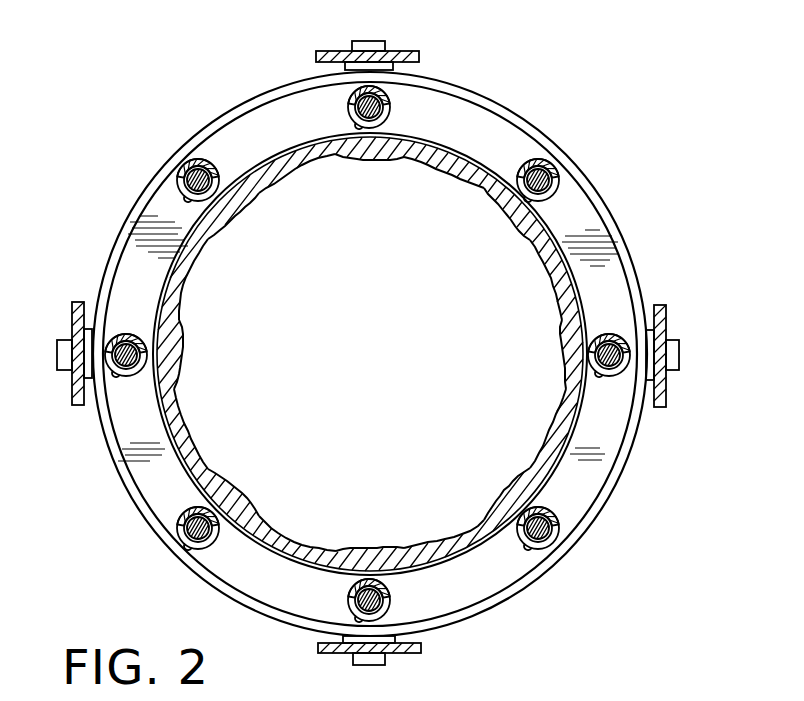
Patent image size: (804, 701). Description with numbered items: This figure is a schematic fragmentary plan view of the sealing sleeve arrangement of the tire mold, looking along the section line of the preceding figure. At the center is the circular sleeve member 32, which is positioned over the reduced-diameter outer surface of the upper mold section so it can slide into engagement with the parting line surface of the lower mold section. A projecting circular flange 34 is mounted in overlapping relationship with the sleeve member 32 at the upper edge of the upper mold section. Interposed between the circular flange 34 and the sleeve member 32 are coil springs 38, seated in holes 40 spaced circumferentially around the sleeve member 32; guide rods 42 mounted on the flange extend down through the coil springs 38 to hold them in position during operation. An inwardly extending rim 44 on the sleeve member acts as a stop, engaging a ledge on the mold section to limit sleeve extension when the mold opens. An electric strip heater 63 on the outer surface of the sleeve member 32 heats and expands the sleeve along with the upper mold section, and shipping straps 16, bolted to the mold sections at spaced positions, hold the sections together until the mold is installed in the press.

The shipping straps 16 is at (394, 50).
The circular sleeve member 32 is at (573, 508).
The circular flange 34 is at (182, 400).
The coil springs 38 is at (392, 104).
The holes 40 is at (196, 158).
The guide rods 42 is at (366, 150).
The inwardly extending rim 44 is at (567, 453).
The electric strip heater 63 is at (603, 505).